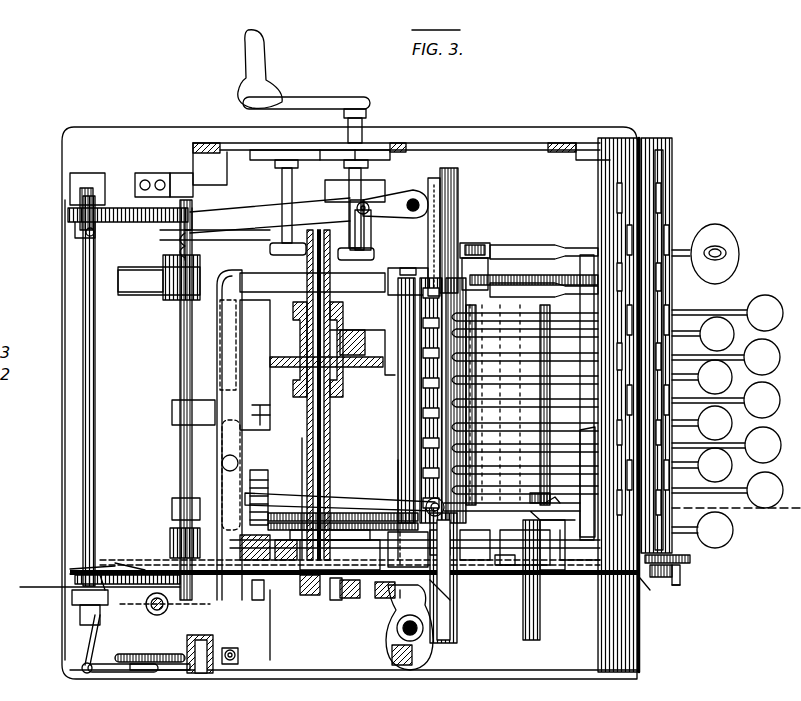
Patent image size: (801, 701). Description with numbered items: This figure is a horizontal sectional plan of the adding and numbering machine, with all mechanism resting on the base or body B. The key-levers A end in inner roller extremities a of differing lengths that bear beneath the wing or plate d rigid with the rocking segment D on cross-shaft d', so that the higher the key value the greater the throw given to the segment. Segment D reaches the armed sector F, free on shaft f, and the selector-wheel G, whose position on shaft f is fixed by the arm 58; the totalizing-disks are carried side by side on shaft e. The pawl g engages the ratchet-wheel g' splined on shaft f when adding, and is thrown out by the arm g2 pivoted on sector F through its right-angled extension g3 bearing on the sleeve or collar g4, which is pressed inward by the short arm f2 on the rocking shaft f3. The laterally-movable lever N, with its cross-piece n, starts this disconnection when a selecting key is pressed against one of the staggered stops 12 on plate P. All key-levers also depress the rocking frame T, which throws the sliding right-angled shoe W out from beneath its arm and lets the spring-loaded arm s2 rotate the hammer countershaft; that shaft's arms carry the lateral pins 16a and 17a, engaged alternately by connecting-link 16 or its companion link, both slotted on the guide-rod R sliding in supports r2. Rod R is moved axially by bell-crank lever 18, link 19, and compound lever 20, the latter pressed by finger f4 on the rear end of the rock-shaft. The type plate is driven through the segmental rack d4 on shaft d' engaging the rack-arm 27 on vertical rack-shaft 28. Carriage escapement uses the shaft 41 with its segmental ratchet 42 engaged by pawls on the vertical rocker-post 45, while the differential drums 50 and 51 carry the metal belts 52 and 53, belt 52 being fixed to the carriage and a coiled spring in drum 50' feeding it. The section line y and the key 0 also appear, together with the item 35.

The stop 12 is at (663, 192).
The connecting-link 16 is at (160, 225).
The lateral pin 16a is at (75, 230).
The lateral pin 17a is at (75, 576).
The bell-crank lever 18 is at (90, 638).
The link 19 is at (118, 672).
The compound lever 20 is at (163, 670).
The rack-arm 27 is at (397, 600).
The vertical rack-shaft 28 is at (388, 630).
The bar 35 is at (150, 580).
The shaft 41 is at (502, 580).
The segmental ratchet 42 is at (213, 640).
The vertical rocker-post 45 is at (552, 500).
The differential drum 50 is at (458, 578).
The drum 50' is at (526, 588).
The differential drum 51 is at (458, 200).
The metal belt 52 is at (440, 228).
The metal belt 53 is at (460, 248).
The arm 58 is at (375, 330).
The key-levers A is at (740, 300).
The base or body B is at (575, 164).
The rocking segment D is at (380, 523).
The armed sector F is at (360, 513).
The selector-wheel G is at (326, 349).
The laterally-movable lever N is at (690, 560).
The key 0 is at (685, 592).
The plate P is at (672, 212).
The guide-rod R is at (95, 408).
The rocking frame T is at (544, 392).
The sliding right-angled shoe W is at (252, 430).
The roller extremities a is at (469, 281).
The wing or plate d is at (411, 400).
The cross-shaft d' is at (386, 506).
The segmental rack d4 is at (454, 596).
The shaft e is at (333, 464).
The shaft f is at (330, 440).
The short arm f2 is at (265, 600).
The oscillating or rocking shaft f3 is at (360, 598).
The finger f4 is at (281, 625).
The pawl g is at (261, 496).
The ratchet-wheel g' is at (340, 494).
The arm g2 is at (247, 547).
The right-angled extension g3 is at (274, 548).
The sleeve or collar g4 is at (68, 215).
The cross-piece n is at (649, 591).
The supports r2 is at (70, 200).
The arm s2 is at (165, 610).
The line y is at (93, 584).